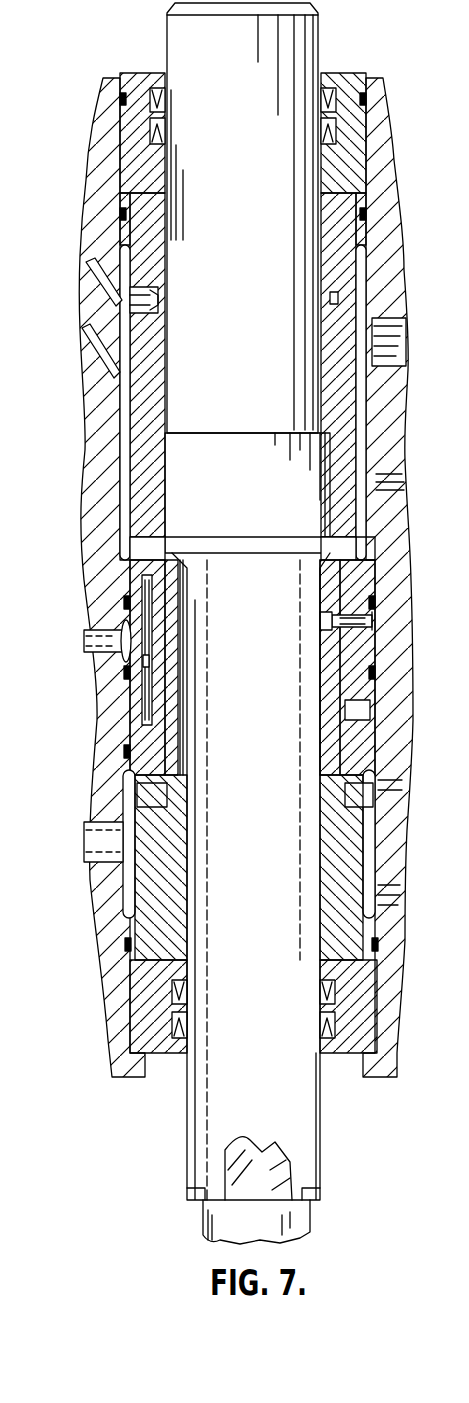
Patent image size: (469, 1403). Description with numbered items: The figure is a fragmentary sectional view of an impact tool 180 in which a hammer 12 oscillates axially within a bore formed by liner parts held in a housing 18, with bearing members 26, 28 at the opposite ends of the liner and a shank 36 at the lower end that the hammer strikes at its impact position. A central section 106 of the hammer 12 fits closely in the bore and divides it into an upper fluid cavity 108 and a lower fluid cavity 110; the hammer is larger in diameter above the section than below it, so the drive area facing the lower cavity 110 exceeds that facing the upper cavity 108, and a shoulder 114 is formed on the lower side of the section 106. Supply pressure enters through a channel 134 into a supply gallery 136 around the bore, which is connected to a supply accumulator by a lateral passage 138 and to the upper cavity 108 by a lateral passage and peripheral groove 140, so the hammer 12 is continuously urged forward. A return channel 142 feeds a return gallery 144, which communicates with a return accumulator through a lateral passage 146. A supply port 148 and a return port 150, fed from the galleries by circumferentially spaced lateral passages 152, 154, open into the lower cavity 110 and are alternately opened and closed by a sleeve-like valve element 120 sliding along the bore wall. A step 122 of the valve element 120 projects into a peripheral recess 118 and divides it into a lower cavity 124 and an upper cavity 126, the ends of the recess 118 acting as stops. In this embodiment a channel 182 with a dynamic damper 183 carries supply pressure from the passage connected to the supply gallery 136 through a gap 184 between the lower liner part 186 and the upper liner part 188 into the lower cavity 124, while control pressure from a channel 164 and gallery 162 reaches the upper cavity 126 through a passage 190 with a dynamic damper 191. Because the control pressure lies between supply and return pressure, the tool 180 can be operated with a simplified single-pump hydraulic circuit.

The impact tool 180 is at (140, 52).
The hammer 12 is at (300, 48).
The bearing member 28 is at (348, 79).
The housing 18 is at (394, 168).
The lateral passage and peripheral groove 140 is at (125, 265).
The supply gallery 136 is at (368, 280).
The channel 134 is at (118, 296).
The lateral passage 138 is at (399, 335).
The upper fluid cavity 108 is at (177, 378).
The upper liner part 188 is at (396, 420).
The section 106 is at (132, 490).
The shoulder 114 is at (378, 547).
The lateral passages 152 is at (132, 553).
The supply port 148 is at (358, 566).
The valve element 120 is at (336, 585).
The channel 182 is at (135, 598).
The passage 190 is at (372, 621).
The upper cavity 126 is at (333, 622).
The dynamic damper 191 is at (396, 632).
The channel 164 is at (122, 650).
The dynamic damper 183 is at (150, 662).
The gallery 162 is at (385, 652).
The step 122 is at (332, 668).
The recess 118 is at (404, 670).
The lower cavity 124 is at (372, 712).
The gap 184 is at (140, 732).
The lateral passage 146 is at (385, 795).
The lateral passages 154 is at (150, 797).
The return port 150 is at (385, 812).
The lower fluid cavity 110 is at (190, 825).
The return gallery 144 is at (370, 835).
The channel 142 is at (115, 845).
The lower liner part 186 is at (380, 880).
The bearing member 26 is at (350, 1050).
The shank 36 is at (285, 1220).